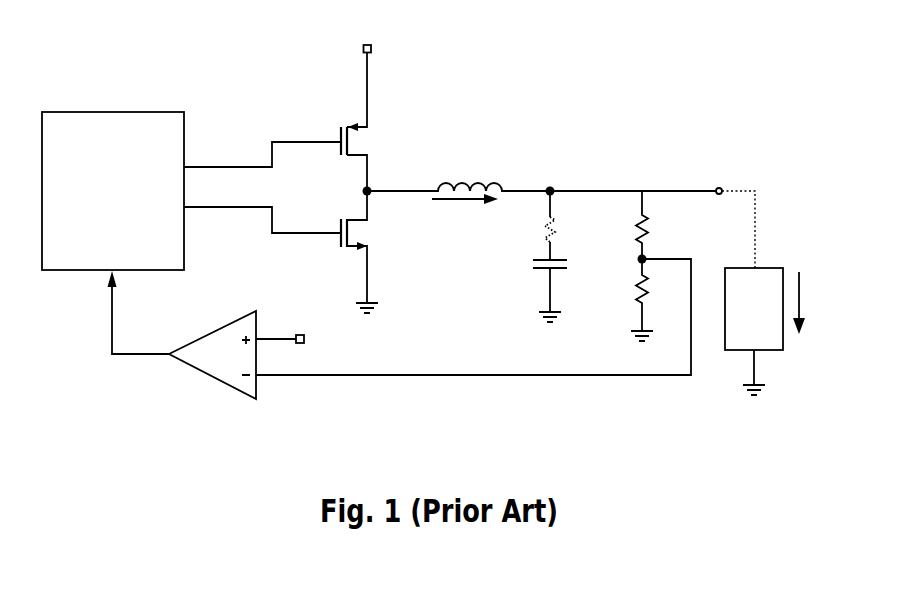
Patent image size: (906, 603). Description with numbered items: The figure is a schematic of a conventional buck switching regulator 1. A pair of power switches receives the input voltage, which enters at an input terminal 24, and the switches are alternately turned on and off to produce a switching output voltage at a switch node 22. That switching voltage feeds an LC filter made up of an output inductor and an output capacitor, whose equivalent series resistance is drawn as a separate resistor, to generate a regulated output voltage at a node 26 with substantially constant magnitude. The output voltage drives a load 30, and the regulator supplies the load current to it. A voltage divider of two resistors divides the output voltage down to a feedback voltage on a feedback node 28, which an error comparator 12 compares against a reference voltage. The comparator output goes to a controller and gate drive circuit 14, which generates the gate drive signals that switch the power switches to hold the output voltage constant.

The switching regulator 1 is at (608, 84).
The error comparator 12 is at (217, 381).
The controller and gate drive circuit 14 is at (108, 255).
The switch node 22 is at (371, 189).
The input voltage terminal (VIN) 24 is at (371, 49).
The node 26 is at (550, 186).
The feedback node 28 is at (428, 377).
The load 30 is at (770, 268).